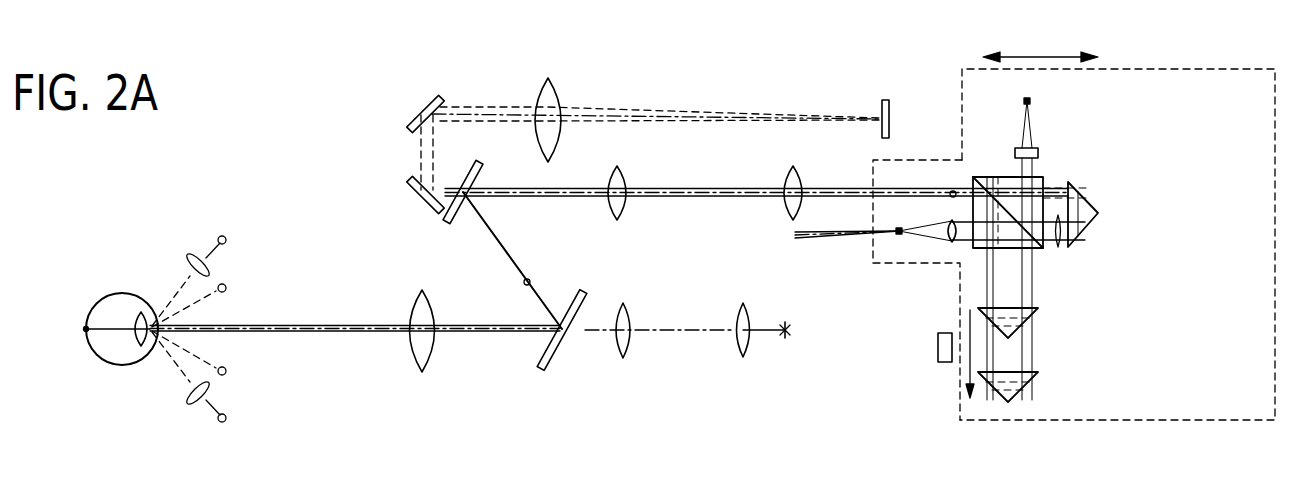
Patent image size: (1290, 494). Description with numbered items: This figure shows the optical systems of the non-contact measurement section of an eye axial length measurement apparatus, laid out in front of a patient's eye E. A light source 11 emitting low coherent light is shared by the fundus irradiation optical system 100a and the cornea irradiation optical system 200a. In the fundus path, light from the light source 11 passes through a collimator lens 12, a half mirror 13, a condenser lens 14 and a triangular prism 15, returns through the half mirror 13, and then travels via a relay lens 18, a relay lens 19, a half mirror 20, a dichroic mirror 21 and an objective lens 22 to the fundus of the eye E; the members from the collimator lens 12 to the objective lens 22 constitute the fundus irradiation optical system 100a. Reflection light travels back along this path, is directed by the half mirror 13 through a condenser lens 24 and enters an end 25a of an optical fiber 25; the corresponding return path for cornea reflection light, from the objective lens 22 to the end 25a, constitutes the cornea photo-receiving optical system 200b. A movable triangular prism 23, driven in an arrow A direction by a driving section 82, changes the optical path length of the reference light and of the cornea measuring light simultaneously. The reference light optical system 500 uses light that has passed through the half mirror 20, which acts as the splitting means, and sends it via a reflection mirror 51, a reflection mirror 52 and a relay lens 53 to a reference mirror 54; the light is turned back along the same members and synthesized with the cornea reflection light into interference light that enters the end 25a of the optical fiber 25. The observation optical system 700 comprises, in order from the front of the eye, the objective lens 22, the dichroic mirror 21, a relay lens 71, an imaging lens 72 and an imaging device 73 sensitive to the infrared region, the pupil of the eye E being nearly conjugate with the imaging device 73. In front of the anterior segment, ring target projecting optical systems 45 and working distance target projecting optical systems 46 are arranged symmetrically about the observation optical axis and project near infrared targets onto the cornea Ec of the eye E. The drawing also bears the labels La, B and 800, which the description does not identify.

The light source 11 is at (1024, 100).
The collimator lens 12 is at (1015, 153).
The half mirror 13 is at (973, 182).
The condenser lens 14 is at (1058, 250).
The triangular prism 15 is at (1093, 222).
The relay lens 18 is at (792, 210).
The relay lens 19 is at (612, 208).
The half mirror 20 is at (468, 220).
The dichroic mirror 21 is at (545, 362).
The objective lens 22 is at (420, 356).
The movable triangular prism 23 is at (1040, 312).
The condenser lens 24 is at (950, 246).
The optical fiber 25 is at (845, 236).
The end of optical fiber 25a is at (899, 237).
The ring target projecting optical system 45 is at (232, 287).
The working distance target projecting optical system 46 is at (198, 248).
The reflection mirror 51 is at (414, 198).
The reflection mirror 52 is at (412, 106).
The relay lens 53 is at (538, 87).
The reference mirror 54 is at (885, 100).
The relay lens 71 is at (627, 318).
The imaging lens 72 is at (738, 320).
The imaging device 73 is at (786, 322).
The driving section 82 is at (948, 355).
The fundus irradiation optical system 100a is at (1085, 258).
The cornea irradiation optical system 200a is at (918, 308).
The cornea photo-receiving optical system 200b is at (917, 290).
The reference light optical system 500 is at (655, 90).
The observation optical system 700 is at (665, 355).
The movable stage 800 is at (1062, 55).
The patient's eye E is at (118, 292).
The cornea Ec is at (160, 322).
The measurement light La is at (773, 190).
The arrow A direction A is at (973, 332).
The movement direction B is at (1040, 35).